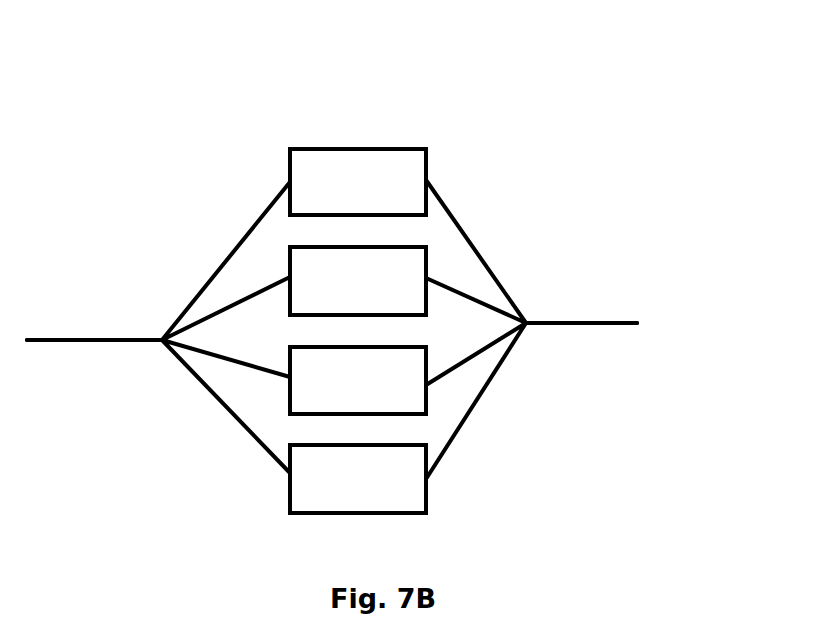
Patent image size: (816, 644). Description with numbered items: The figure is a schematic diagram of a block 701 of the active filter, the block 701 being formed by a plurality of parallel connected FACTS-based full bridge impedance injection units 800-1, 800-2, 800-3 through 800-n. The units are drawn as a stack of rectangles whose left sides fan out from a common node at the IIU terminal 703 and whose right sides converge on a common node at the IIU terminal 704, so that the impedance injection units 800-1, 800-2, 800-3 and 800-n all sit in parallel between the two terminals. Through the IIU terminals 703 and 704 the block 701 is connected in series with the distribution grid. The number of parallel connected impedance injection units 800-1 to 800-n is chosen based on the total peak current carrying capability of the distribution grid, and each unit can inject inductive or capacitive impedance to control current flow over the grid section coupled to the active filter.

The block 701 is at (362, 93).
The IIU terminal 703 is at (110, 340).
The IIU terminal 704 is at (585, 323).
The impedance injection unit 800-1 is at (410, 148).
The impedance injection unit 800-2 is at (409, 270).
The impedance injection unit 800-3 is at (358, 380).
The impedance injection unit 800-n is at (402, 492).